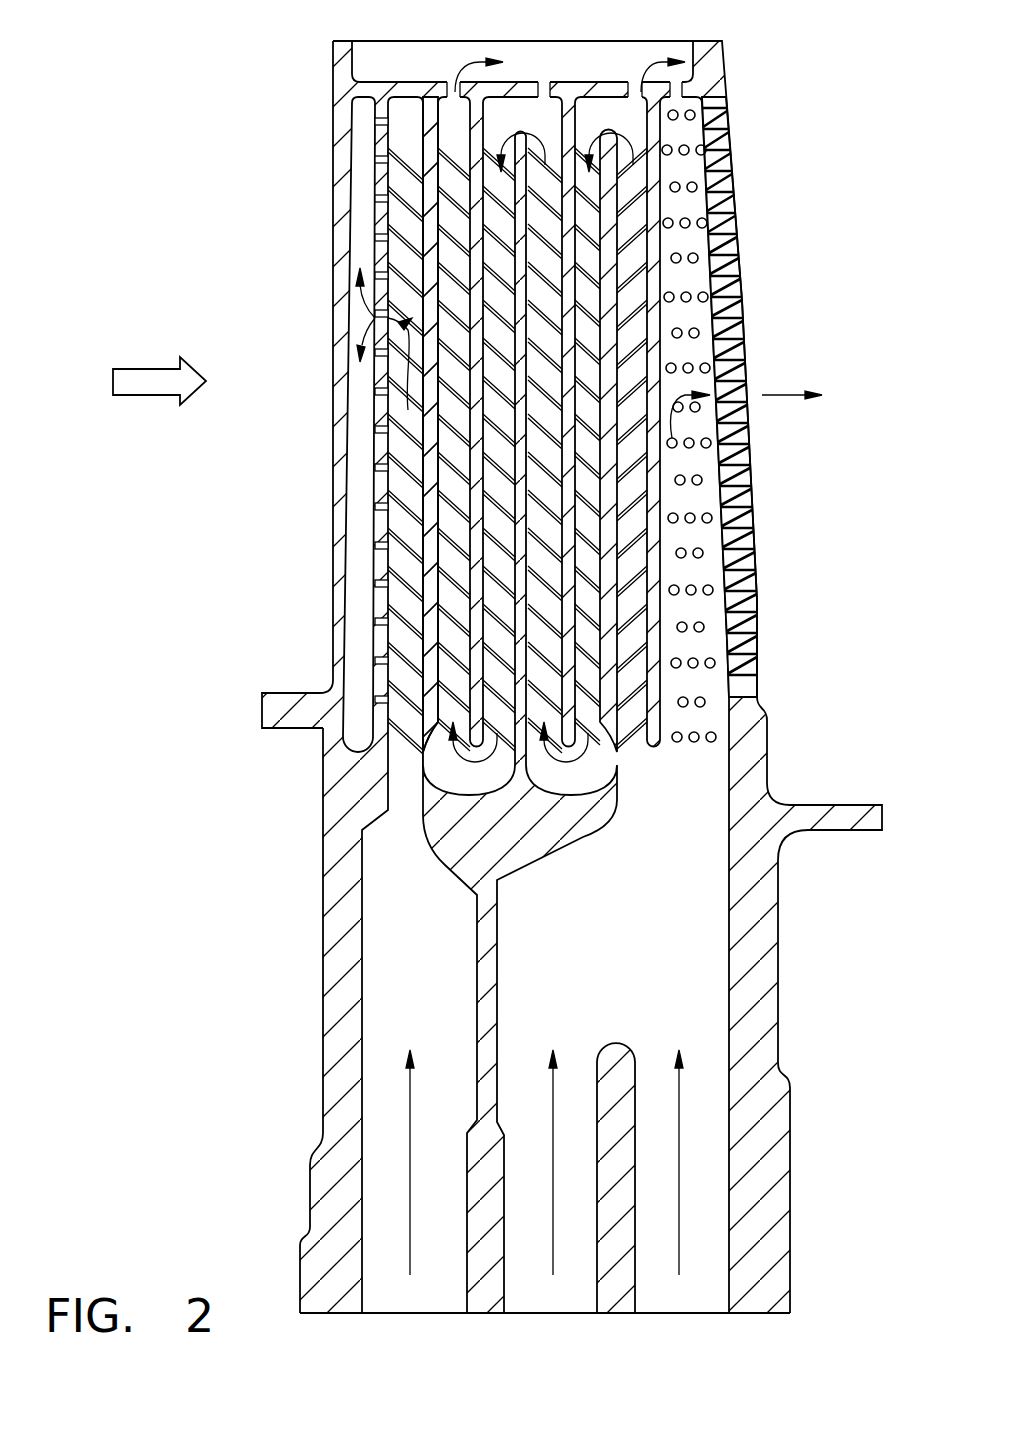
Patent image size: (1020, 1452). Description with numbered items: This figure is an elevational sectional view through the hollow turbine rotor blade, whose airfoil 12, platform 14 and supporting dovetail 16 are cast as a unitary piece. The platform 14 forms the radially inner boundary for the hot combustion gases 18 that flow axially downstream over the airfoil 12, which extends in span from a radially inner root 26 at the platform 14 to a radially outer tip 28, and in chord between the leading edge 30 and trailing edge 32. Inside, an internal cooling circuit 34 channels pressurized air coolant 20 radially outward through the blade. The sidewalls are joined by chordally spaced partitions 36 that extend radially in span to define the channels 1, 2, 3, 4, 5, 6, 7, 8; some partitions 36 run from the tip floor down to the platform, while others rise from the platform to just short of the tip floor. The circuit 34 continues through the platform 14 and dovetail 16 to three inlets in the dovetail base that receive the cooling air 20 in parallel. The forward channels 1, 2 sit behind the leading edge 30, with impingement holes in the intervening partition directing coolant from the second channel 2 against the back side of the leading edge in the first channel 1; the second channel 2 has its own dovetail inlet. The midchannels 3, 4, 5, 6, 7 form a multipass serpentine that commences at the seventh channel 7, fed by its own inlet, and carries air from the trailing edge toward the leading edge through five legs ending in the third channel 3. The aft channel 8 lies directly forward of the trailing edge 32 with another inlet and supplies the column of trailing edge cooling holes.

The first channel 1 is at (367, 536).
The second channel 2 is at (418, 536).
The third channel 3 is at (465, 536).
The fourth channel 4 is at (511, 536).
The fifth channel 5 is at (556, 536).
The sixth channel 6 is at (600, 536).
The seventh channel 7 is at (643, 536).
The aft channel 8 is at (688, 474).
The airfoil 12 is at (333, 108).
The platform 14 is at (262, 712).
The dovetail 16 is at (790, 1180).
The hot combustion gases 18 is at (165, 368).
The pressurized air coolant 20 is at (398, 1300).
The root 26 is at (323, 690).
The tip 28 is at (445, 41).
The leading edge 30 is at (333, 460).
The trailing edge 32 is at (757, 455).
The internal cooling circuit 34 is at (567, 784).
The partitions 36 is at (378, 258).